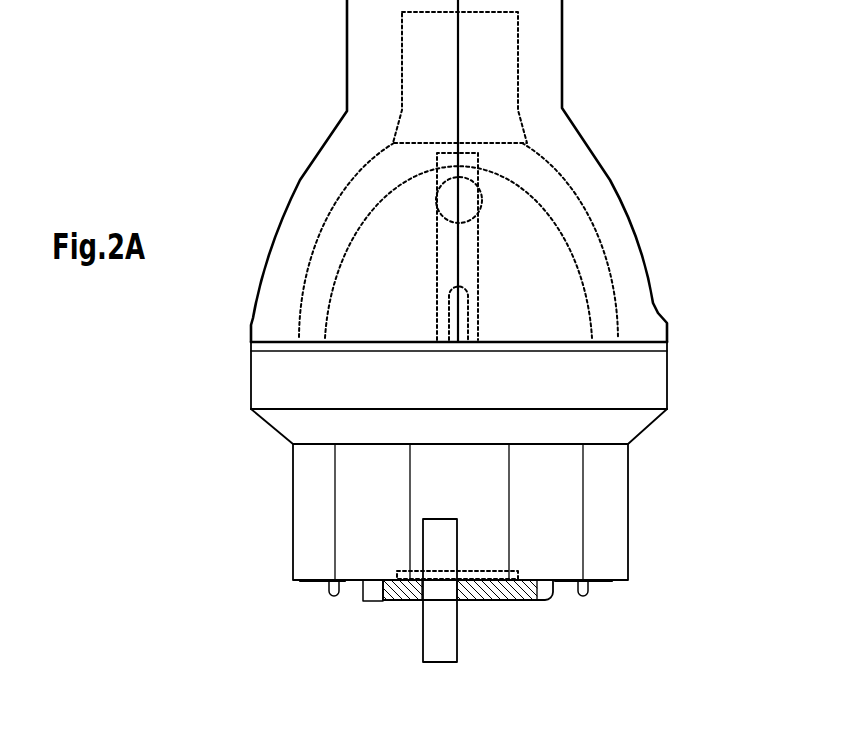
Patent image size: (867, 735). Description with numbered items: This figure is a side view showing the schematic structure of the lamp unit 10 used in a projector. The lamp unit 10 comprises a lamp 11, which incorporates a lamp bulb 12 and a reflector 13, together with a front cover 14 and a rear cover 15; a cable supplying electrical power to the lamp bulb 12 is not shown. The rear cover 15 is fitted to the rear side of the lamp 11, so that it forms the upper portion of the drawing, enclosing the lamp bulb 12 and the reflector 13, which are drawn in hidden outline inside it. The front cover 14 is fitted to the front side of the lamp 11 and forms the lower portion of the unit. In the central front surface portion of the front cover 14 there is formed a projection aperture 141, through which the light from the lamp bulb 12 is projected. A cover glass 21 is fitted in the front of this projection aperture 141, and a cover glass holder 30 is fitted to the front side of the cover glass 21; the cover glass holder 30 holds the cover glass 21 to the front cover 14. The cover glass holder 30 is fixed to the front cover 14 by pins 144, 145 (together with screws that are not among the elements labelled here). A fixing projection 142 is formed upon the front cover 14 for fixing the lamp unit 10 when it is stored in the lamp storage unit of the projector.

The lamp unit 10 is at (500, 353).
The lamp 11 is at (389, 124).
The lamp bulb 12 is at (437, 278).
The reflector 13 is at (338, 208).
The front cover 14 is at (630, 503).
The projection aperture 141 is at (467, 570).
The fixing projection 142 is at (421, 634).
The pin 144 is at (334, 597).
The pin 145 is at (583, 597).
The rear cover 15 is at (627, 207).
The cover glass 21 is at (478, 604).
The cover glass holder 30 is at (520, 602).